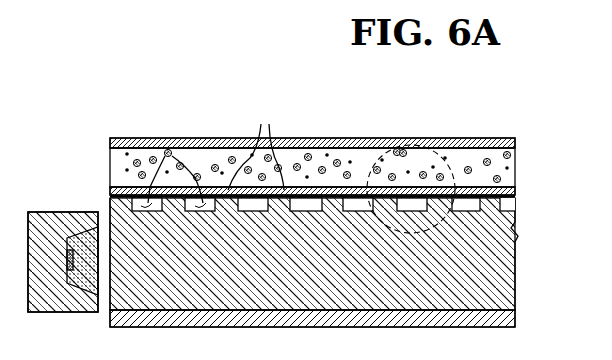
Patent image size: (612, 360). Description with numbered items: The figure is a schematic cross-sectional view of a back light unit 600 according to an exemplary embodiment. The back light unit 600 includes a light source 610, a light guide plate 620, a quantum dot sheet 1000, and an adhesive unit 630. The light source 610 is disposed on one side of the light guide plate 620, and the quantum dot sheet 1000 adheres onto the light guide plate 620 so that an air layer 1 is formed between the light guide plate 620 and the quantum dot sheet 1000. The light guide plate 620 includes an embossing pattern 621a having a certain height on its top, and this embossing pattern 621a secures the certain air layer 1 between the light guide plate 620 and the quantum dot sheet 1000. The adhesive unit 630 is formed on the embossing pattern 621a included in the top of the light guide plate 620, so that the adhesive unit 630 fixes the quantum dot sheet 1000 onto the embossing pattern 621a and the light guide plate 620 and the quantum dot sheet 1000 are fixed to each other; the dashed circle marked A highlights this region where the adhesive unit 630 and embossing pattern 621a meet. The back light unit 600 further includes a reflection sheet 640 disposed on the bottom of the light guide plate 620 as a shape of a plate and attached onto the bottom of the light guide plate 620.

The back light unit 600 is at (50, 105).
The light source 610 is at (43, 212).
The quantum dot sheet 1000 is at (104, 138).
The air layer 1 is at (168, 150).
The embossing pattern 621a is at (256, 147).
The enlarged region A is at (404, 146).
The adhesive unit 630 is at (516, 197).
The light guide plate 620 is at (503, 252).
The reflection sheet 640 is at (505, 318).